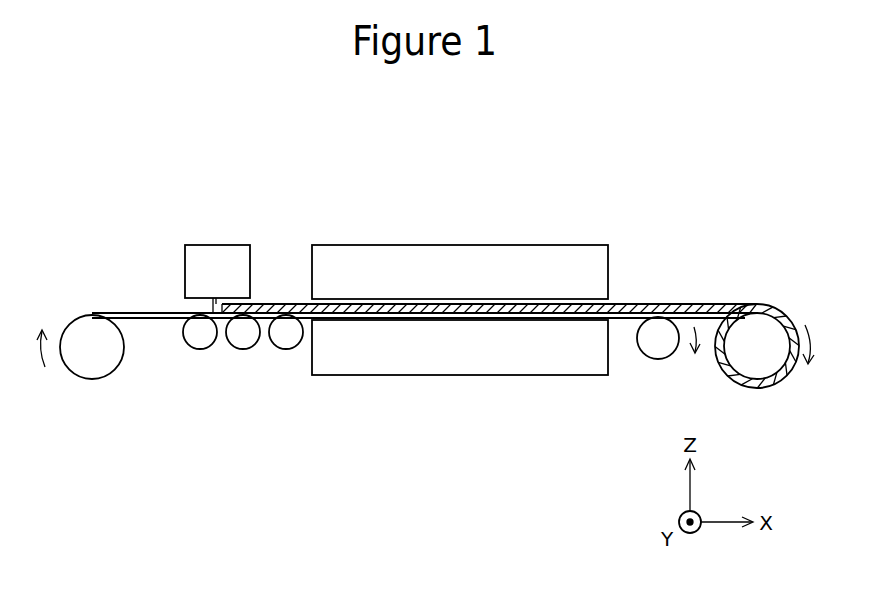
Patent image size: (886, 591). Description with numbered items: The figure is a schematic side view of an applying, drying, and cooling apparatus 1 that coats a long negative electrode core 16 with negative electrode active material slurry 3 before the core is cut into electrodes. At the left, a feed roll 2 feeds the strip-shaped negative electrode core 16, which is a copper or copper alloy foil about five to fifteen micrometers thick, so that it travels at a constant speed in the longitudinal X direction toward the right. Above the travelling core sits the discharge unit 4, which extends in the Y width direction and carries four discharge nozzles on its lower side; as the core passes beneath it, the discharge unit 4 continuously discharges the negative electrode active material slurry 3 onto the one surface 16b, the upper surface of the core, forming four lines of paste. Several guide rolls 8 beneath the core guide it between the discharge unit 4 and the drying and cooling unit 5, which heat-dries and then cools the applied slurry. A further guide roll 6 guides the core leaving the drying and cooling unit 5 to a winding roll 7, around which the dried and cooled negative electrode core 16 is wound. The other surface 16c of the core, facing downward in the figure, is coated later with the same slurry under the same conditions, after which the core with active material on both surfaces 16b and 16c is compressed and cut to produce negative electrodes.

The applying, drying, and cooling apparatus 1 is at (372, 168).
The feed roll 2 is at (92, 358).
The negative electrode active material slurry 3 is at (280, 303).
The discharge unit 4 is at (216, 260).
The drying and cooling unit 5 is at (445, 240).
The guide roll 6 is at (660, 350).
The winding roll 7 is at (756, 358).
The guide rolls 8 is at (204, 340).
The negative electrode core 16 is at (123, 312).
The one surface 16b is at (155, 312).
The other surface 16c is at (175, 319).